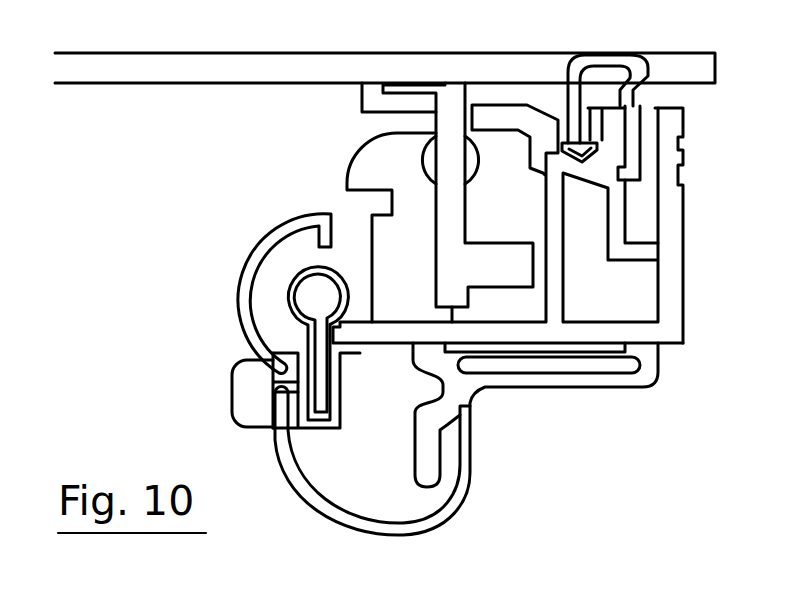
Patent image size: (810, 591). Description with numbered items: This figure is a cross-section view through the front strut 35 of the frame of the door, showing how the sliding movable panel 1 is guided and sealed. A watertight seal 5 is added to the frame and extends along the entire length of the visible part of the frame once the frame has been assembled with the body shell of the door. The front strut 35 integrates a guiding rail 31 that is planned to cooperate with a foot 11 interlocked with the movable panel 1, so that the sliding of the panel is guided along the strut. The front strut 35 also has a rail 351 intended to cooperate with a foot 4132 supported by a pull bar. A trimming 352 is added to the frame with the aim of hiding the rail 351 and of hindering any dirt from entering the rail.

The movable panel 1 is at (678, 63).
The watertight seal 5 is at (640, 108).
The foot 11 is at (477, 265).
The guiding rail 31 is at (422, 156).
The front strut 35 is at (668, 273).
The rail 351 is at (288, 316).
The trimming 352 is at (475, 425).
The foot 4132 is at (262, 400).